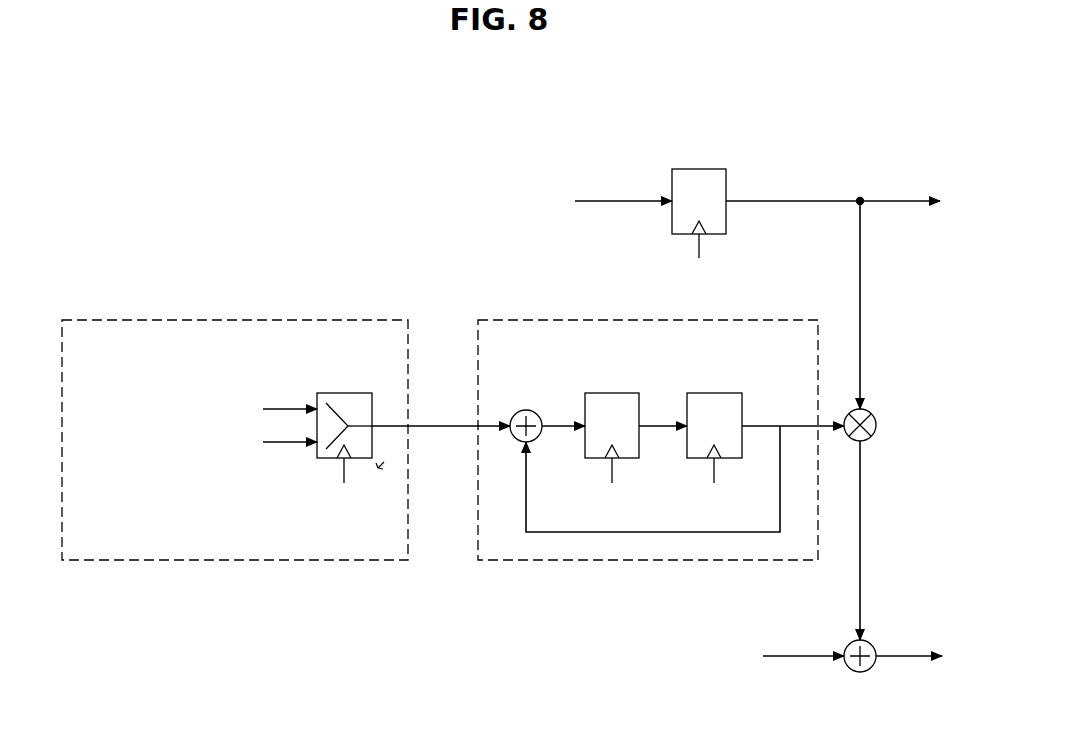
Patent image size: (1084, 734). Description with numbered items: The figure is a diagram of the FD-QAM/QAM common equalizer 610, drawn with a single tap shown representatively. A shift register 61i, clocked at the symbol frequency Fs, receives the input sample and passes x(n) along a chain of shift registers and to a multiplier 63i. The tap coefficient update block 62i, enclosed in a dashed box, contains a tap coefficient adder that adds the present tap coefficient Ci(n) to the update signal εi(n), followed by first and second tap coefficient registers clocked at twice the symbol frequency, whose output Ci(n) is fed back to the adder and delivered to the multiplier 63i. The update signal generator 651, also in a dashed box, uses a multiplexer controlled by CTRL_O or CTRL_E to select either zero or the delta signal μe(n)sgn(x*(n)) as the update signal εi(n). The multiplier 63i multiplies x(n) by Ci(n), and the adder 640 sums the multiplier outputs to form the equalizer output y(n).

The FD-QAM/QAM common equalizer 610 is at (258, 209).
The shift register 61i is at (699, 169).
The update signal generator 651 is at (220, 560).
The tap coefficient update block 62i is at (645, 560).
The multiplier 63i is at (872, 413).
The adder 640 is at (872, 644).